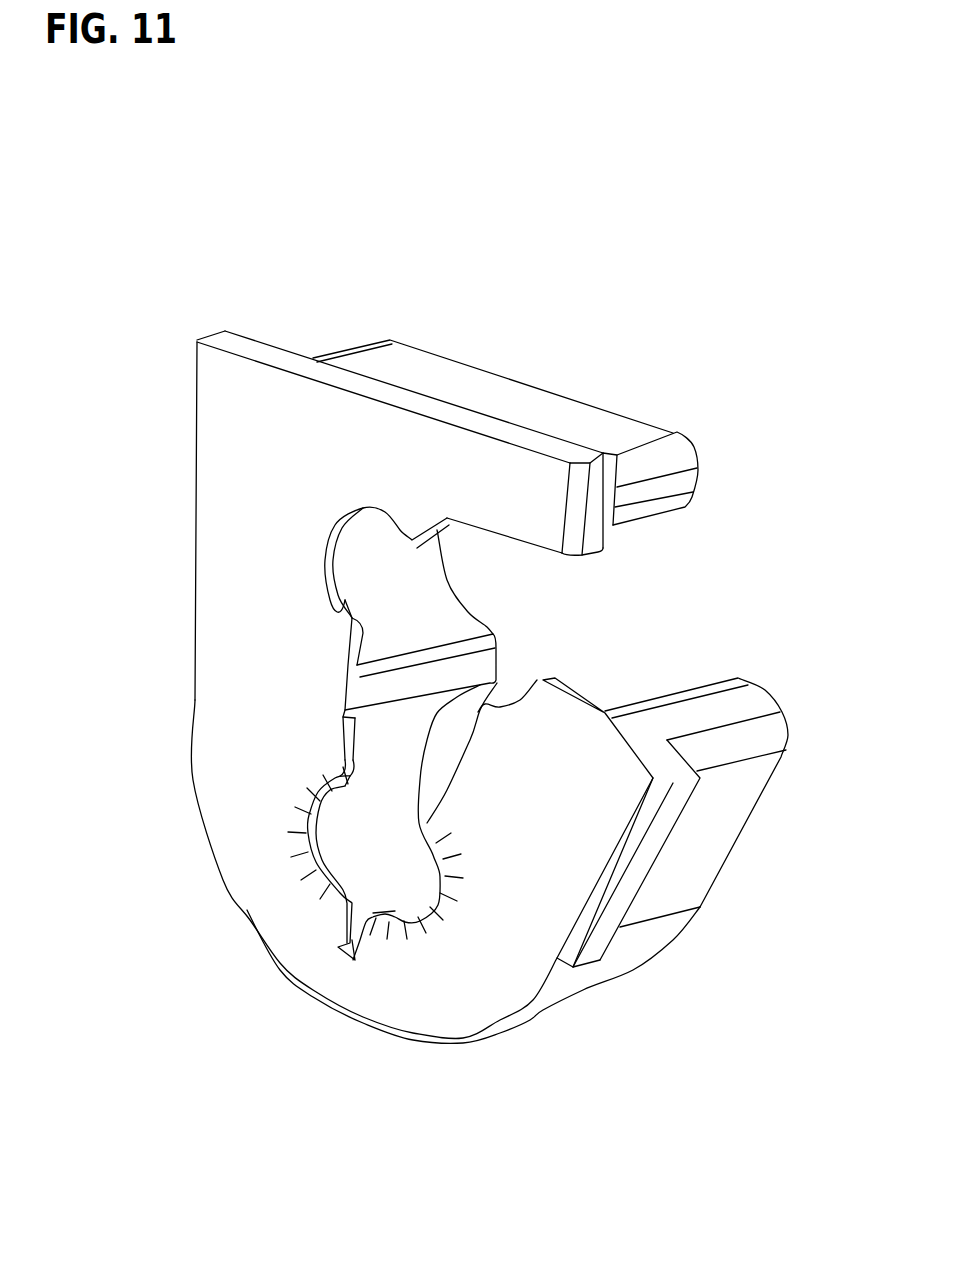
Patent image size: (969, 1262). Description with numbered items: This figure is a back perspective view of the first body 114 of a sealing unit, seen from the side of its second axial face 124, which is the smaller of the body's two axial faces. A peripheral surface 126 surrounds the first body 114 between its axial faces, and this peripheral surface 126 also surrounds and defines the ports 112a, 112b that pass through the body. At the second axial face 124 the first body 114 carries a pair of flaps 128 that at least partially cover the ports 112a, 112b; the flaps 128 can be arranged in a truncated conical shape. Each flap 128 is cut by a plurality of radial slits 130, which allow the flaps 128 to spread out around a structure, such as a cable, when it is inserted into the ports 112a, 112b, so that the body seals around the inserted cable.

The first body 114 is at (700, 300).
The second axial face 124 is at (218, 668).
The peripheral surface 126 is at (490, 400).
The port 112a is at (370, 570).
The port 112b is at (363, 834).
The flaps 128 is at (338, 772).
The radial slits 130 is at (400, 936).